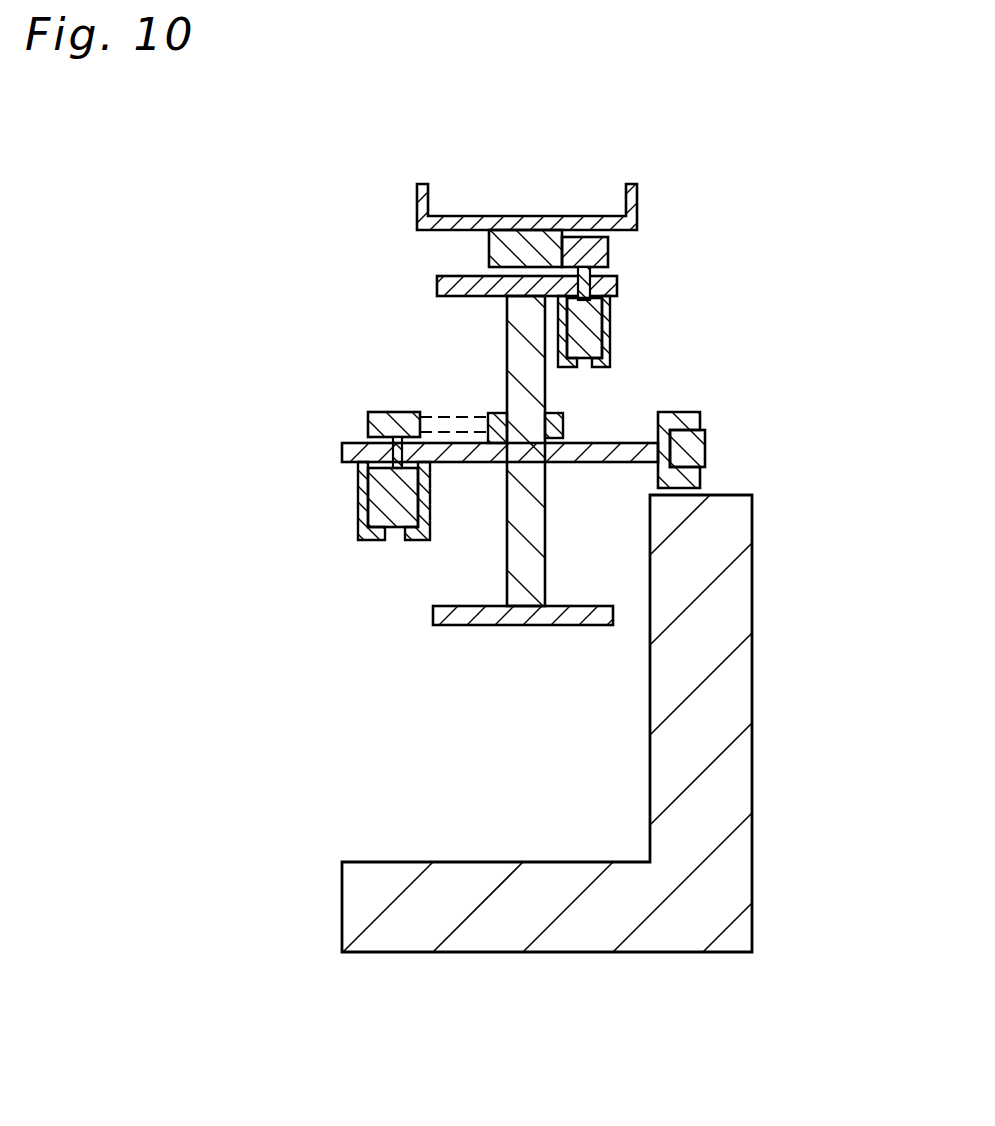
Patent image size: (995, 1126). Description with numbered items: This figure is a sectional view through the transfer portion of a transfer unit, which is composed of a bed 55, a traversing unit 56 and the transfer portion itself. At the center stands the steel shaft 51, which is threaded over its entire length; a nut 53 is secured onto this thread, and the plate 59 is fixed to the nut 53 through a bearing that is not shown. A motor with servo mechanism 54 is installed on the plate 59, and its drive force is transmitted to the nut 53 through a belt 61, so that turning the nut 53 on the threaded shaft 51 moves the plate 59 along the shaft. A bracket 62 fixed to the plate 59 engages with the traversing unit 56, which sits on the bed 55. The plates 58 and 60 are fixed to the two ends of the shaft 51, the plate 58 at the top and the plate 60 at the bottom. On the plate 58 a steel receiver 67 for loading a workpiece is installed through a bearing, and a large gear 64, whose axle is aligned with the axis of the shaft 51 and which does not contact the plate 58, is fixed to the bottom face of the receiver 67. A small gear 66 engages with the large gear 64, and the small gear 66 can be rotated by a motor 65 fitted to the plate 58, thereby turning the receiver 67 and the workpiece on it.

The steel shaft 51 is at (515, 352).
The nut 53 is at (562, 413).
The motor with servo mechanism 54 is at (386, 507).
The bed 55 is at (735, 537).
The traversing unit 56 is at (707, 457).
The plate 58 is at (436, 283).
The plate 59 is at (345, 447).
The plate 60 is at (435, 612).
The belt 61 is at (367, 422).
The bracket 62 is at (697, 475).
The large gear 64 is at (489, 244).
The motor 65 is at (590, 338).
The small gear 66 is at (608, 245).
The steel receiver 67 is at (418, 198).